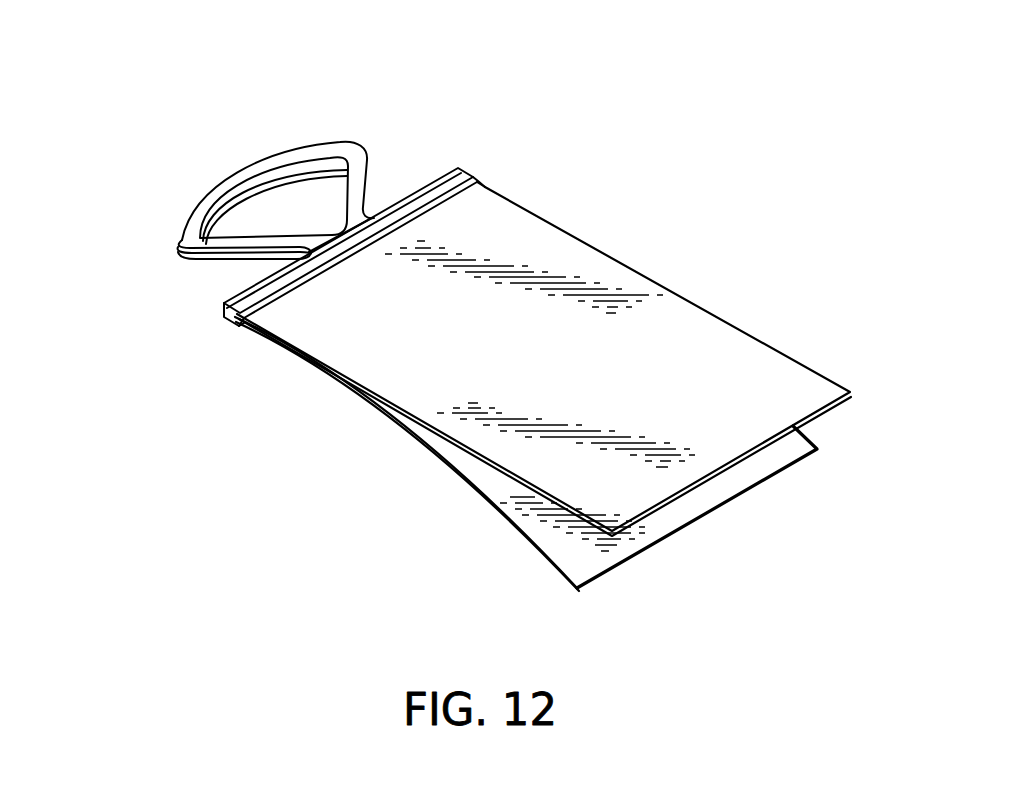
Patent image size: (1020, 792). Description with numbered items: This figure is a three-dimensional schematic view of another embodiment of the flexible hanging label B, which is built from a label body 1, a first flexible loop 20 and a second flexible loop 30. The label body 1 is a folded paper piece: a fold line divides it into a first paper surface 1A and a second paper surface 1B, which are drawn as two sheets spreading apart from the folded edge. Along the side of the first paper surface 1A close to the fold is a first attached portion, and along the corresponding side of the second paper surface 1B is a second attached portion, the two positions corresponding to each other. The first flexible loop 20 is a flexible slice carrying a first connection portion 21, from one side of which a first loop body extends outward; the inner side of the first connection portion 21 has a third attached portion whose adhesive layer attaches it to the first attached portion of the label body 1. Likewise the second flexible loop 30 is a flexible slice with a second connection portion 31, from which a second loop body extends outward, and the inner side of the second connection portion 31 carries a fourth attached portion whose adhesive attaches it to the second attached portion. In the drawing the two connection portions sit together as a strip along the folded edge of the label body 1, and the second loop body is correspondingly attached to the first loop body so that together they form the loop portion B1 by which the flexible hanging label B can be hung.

The flexible hanging label B is at (610, 210).
The label body 1 is at (678, 277).
The first paper surface 1A is at (743, 363).
The second paper surface 1B is at (396, 429).
The first connection portion 21 is at (433, 196).
The second connection portion 31 is at (240, 324).
The loop portion B1 is at (72, 318).
The first flexible loop 20 is at (195, 215).
The second flexible loop 30 is at (217, 262).